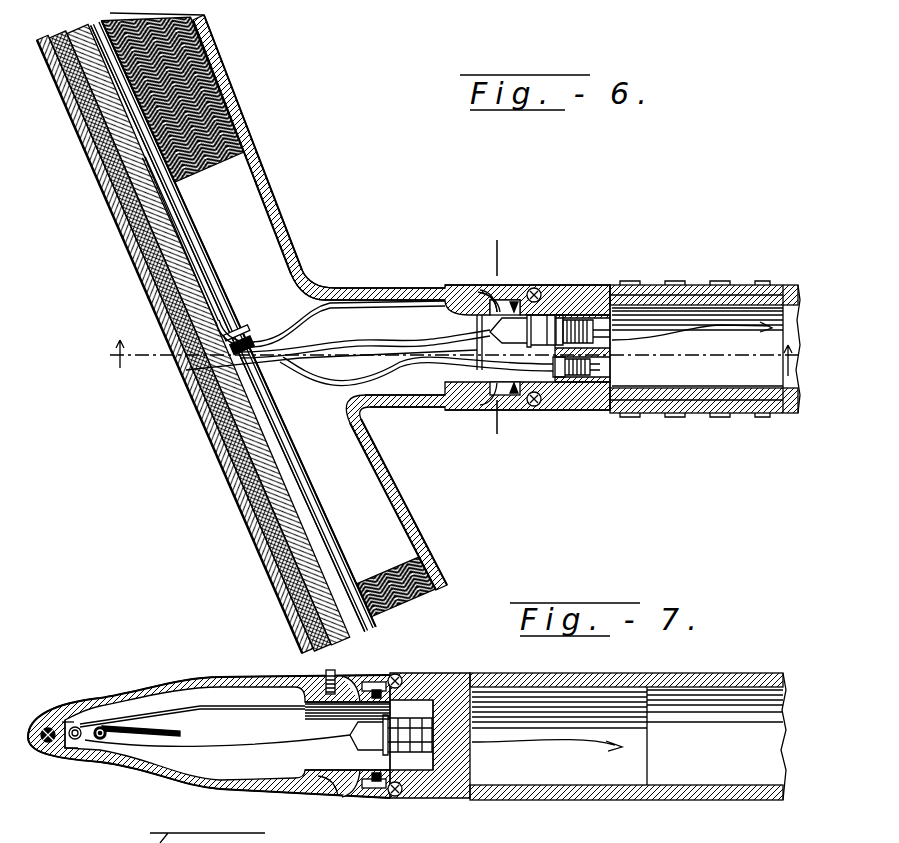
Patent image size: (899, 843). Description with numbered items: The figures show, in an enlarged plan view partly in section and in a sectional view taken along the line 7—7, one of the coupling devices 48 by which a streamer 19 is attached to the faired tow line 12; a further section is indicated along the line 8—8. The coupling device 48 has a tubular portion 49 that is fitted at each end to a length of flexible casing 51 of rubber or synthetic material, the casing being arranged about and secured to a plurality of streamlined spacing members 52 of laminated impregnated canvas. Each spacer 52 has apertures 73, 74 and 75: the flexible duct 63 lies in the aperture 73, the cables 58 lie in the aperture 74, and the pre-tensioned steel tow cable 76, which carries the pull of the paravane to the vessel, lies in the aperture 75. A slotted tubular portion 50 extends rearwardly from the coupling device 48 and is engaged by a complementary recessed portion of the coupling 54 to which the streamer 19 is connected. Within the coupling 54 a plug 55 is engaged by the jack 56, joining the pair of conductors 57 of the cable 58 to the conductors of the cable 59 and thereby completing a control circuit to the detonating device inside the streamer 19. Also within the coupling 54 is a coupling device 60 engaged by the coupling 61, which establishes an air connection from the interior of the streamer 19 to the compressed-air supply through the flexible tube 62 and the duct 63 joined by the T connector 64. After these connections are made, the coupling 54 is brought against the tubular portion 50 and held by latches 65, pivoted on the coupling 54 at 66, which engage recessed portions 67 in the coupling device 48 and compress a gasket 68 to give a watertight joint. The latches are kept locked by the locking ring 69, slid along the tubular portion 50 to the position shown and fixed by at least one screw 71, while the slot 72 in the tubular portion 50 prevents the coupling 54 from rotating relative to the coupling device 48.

In FIG. 6, the section line 7— 7 is at (455, 367).
In FIG. 6, the section line 8— 8 is at (489, 253).
In FIG. 6, the faired tow line 12 is at (226, 73).
In FIG. 6, the streamer 19 is at (712, 284).
In FIG. 7, the streamer 19 is at (706, 673).
In FIG. 6, the coupling device 48 is at (326, 282).
In FIG. 7, the coupling device 48 is at (287, 671).
In FIG. 6, the tubular portion 49 is at (196, 418).
In FIG. 7, the tubular portion 49 is at (200, 677).
In FIG. 6, the tubular portion 50 is at (415, 288).
In FIG. 7, the tubular portion 50 is at (300, 795).
In FIG. 6, the flexible casing 51 is at (98, 182).
In FIG. 6, the spacing members 52 is at (200, 46).
In FIG. 7, the spacing members 52 is at (122, 738).
In FIG. 6, the coupling 54 is at (604, 282).
In FIG. 7, the coupling 54 is at (453, 672).
In FIG. 6, the plug 55 is at (556, 314).
In FIG. 7, the plug 55 is at (416, 700).
In FIG. 6, the jack 56 is at (526, 331).
In FIG. 7, the jack 56 is at (352, 740).
In FIG. 7, the conductors 57 is at (66, 721).
In FIG. 6, the cable 58 is at (172, 230).
In FIG. 7, the cable 58 is at (85, 722).
In FIG. 6, the cable 59 is at (648, 338).
In FIG. 7, the cable 59 is at (535, 741).
In FIG. 6, the coupling device 60 is at (590, 396).
In FIG. 6, the coupling 61 is at (566, 396).
In FIG. 6, the flexible tube 62 is at (292, 362).
In FIG. 6, the duct 63 is at (205, 260).
In FIG. 7, the duct 63 is at (82, 746).
In FIG. 6, the T connector 64 is at (254, 350).
In FIG. 7, the T connector 64 is at (102, 742).
In FIG. 6, the latches 65 is at (505, 298).
In FIG. 7, the latches 65 is at (373, 681).
In FIG. 6, the pivot 66 is at (537, 288).
In FIG. 7, the pivot 66 is at (396, 674).
In FIG. 6, the recessed portions 67 is at (498, 290).
In FIG. 7, the recessed portions 67 is at (352, 680).
In FIG. 6, the gasket 68 is at (518, 300).
In FIG. 7, the gasket 68 is at (376, 746).
In FIG. 6, the locking ring 69 is at (478, 290).
In FIG. 7, the locking ring 69 is at (345, 799).
In FIG. 7, the screw 71 is at (331, 672).
In FIG. 6, the slot 72 is at (477, 348).
In FIG. 7, the slot 72 is at (310, 716).
In FIG. 6, the aperture 73 is at (100, 34).
In FIG. 7, the aperture 73 is at (105, 742).
In FIG. 6, the aperture 74 is at (64, 36).
In FIG. 7, the aperture 74 is at (78, 745).
In FIG. 6, the aperture 75 is at (42, 40).
In FIG. 6, the tow cable 76 is at (186, 370).
In FIG. 7, the tow cable 76 is at (48, 727).